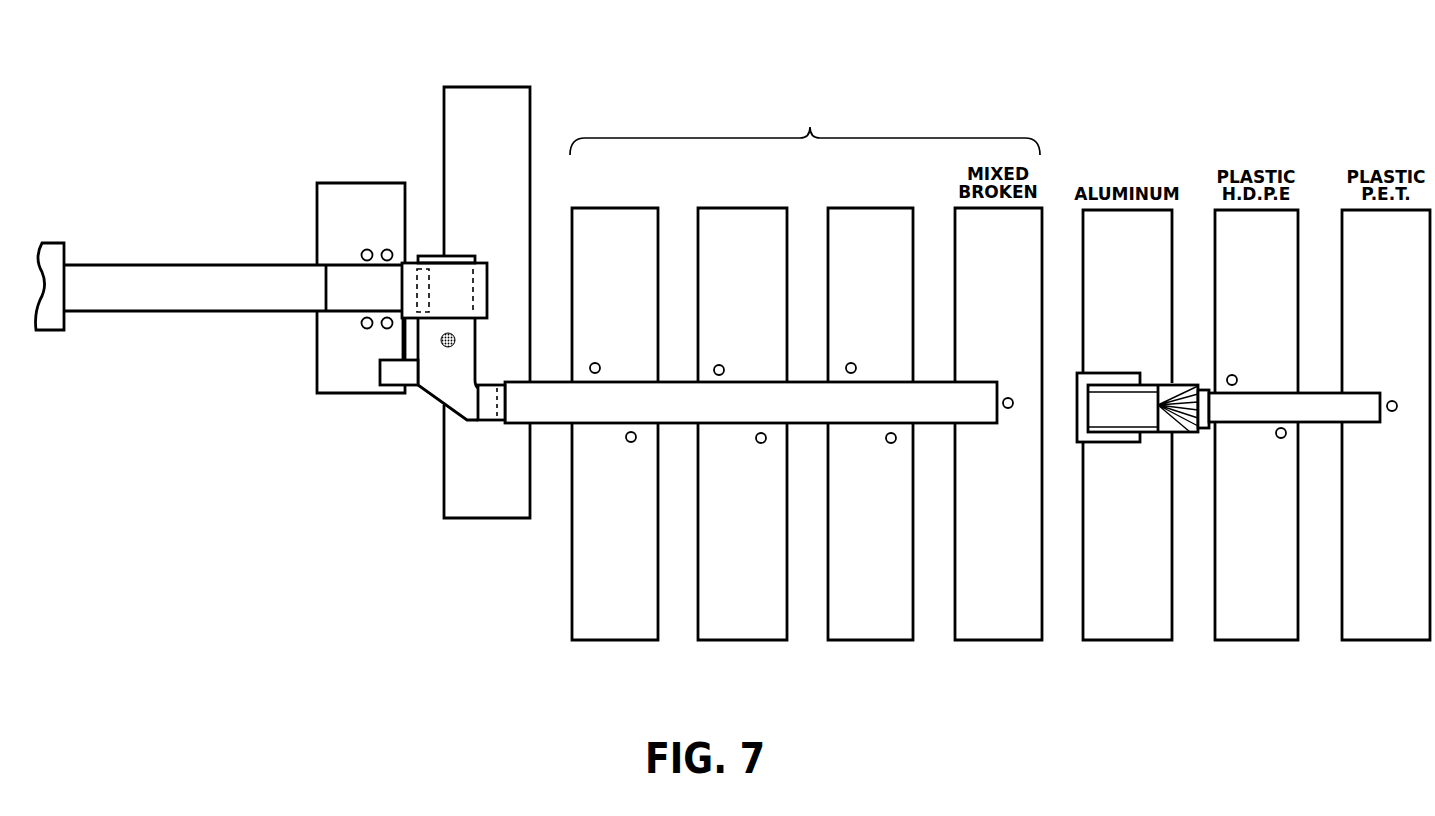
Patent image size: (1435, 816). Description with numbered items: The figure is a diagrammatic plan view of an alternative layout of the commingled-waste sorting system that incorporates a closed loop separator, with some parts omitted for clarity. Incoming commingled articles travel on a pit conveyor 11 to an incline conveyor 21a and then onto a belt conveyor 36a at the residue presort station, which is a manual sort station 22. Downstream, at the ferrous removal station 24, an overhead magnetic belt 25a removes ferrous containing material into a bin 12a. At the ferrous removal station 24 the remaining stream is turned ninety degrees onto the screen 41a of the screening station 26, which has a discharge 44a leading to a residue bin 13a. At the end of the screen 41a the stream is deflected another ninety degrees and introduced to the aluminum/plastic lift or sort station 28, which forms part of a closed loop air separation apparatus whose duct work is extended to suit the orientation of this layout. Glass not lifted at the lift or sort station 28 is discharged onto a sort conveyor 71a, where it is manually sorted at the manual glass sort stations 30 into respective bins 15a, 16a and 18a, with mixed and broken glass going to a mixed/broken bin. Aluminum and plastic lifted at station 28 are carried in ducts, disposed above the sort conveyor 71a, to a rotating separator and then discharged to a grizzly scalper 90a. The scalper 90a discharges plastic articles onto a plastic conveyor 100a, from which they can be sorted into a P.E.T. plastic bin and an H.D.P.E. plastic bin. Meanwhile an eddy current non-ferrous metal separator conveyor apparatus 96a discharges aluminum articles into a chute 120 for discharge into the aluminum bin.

The pit conveyor 11 is at (47, 318).
The incline conveyor 21a is at (195, 299).
The belt conveyor 36a is at (340, 300).
The residue bin 13a is at (327, 382).
The manual sort station 22 is at (320, 263).
The discharge 44a is at (382, 375).
The screening station 26 is at (424, 400).
The aluminum/plastic lift or sort station 28 is at (488, 425).
The ferrous removal station 24 is at (515, 256).
The overhead magnetic belt 25a is at (487, 290).
The screen 41a is at (456, 338).
The bin 12a is at (486, 518).
The manual glass sort stations 30 is at (815, 118).
The sort conveyor 71a is at (694, 418).
The bin 16a is at (612, 625).
The bin 18a is at (742, 625).
The bin 15a is at (860, 640).
The chute 120 is at (1105, 443).
The eddy current non-ferrous metal separator conveyor apparatus 96a is at (1113, 400).
The grizzly scalper 90a is at (1155, 440).
The plastic conveyor 100a is at (1262, 406).